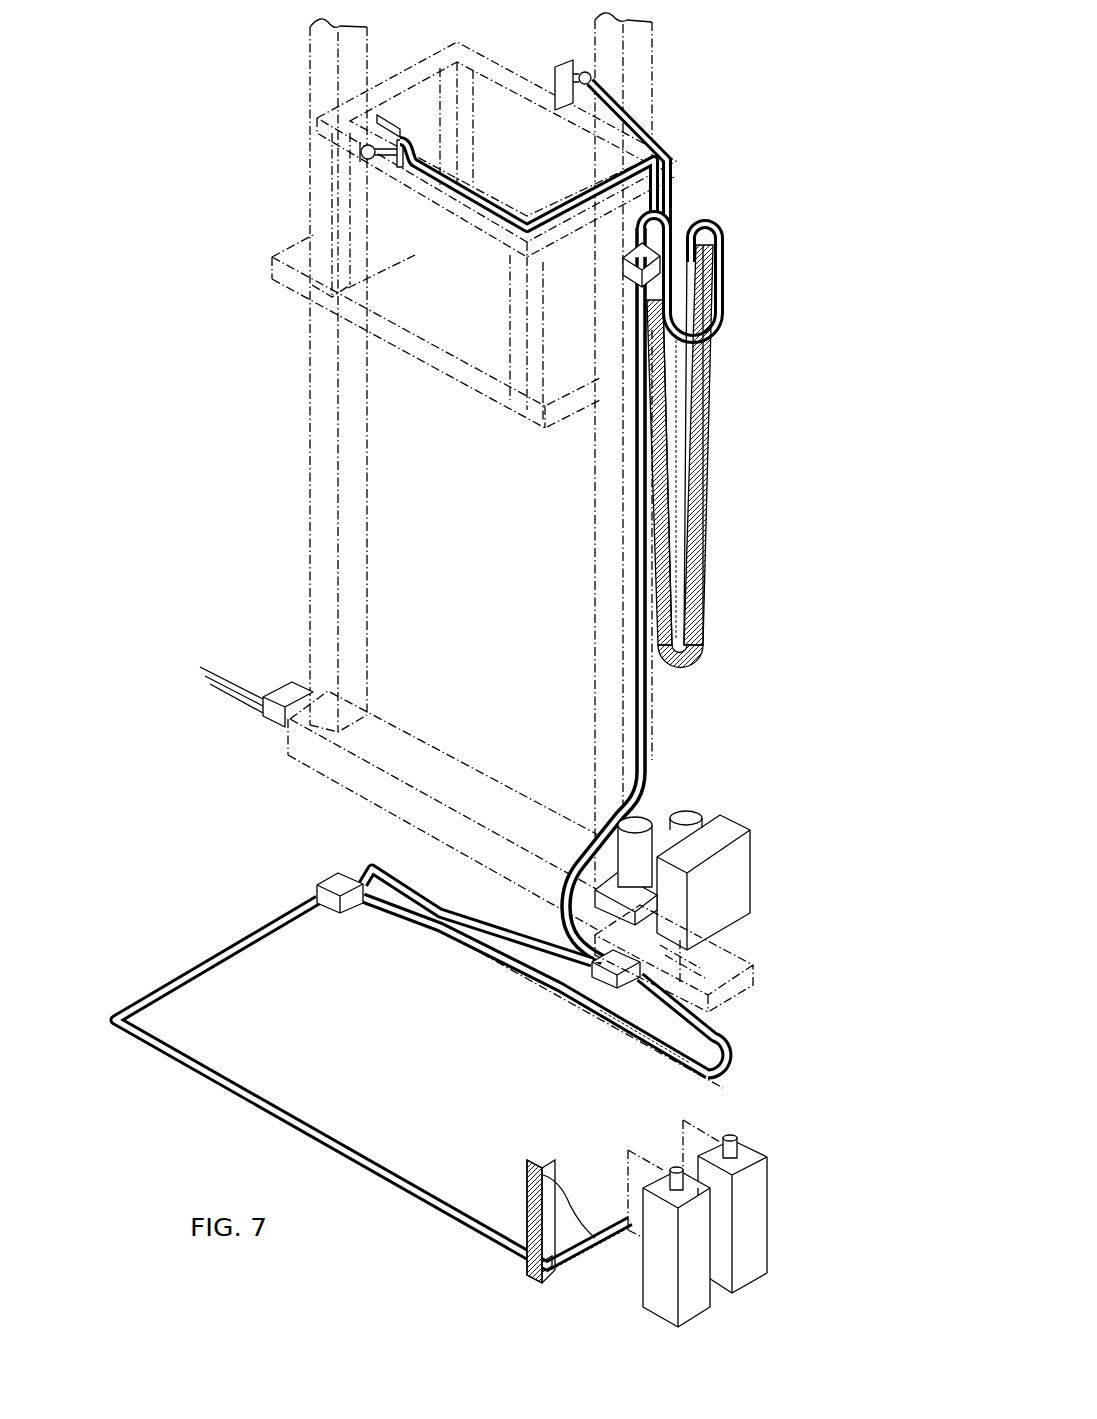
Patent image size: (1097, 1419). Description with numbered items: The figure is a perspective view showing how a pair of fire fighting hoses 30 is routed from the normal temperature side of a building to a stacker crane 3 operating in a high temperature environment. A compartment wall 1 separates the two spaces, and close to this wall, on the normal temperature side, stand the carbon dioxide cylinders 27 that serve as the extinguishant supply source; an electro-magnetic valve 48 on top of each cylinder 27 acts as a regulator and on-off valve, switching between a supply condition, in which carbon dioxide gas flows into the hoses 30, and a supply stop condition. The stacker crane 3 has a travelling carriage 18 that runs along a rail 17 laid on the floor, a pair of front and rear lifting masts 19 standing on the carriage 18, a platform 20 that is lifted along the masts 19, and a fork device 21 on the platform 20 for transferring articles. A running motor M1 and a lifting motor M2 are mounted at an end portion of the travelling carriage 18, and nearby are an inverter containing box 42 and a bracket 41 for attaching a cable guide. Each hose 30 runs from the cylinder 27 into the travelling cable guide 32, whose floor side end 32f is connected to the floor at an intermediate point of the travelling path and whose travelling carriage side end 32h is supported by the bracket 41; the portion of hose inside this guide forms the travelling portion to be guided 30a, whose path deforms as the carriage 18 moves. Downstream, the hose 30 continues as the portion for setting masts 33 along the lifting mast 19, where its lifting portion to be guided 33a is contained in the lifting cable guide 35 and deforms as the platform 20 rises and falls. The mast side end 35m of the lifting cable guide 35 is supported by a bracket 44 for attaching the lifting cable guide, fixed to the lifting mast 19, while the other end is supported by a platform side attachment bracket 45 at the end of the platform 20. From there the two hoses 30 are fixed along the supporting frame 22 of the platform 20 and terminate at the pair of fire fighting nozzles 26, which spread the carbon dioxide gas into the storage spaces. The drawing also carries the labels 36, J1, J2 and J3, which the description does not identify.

The compartment wall 1 is at (527, 1200).
The stacker crane 3 is at (210, 425).
The rail 17 is at (240, 708).
The travelling carriage 18 is at (412, 737).
The lifting mast 19 is at (312, 580).
The platform 20 is at (480, 418).
The fork device 21 is at (470, 332).
The supporting frame 22 is at (393, 78).
The fire fighting nozzle 26 is at (355, 152).
The carbon dioxide cylinder 27 is at (760, 1233).
The fire fighting hose 30 is at (205, 955).
The travelling portion to be guided 30a is at (520, 983).
The travelling cable guide 32 is at (735, 1062).
The floor side end 32f is at (412, 913).
The travelling carriage side end 32h is at (628, 1022).
The portion for setting masts 33 is at (648, 738).
The lifting portion to be guided 33a is at (697, 500).
The lifting cable guide 35 is at (708, 560).
The mast side end 35m is at (725, 260).
The upper tube 36 is at (455, 185).
The bracket for attaching cable guide 41 is at (745, 958).
The inverter containing box 42 is at (740, 858).
The bracket for attaching the lifting cable guide 44 is at (677, 233).
The platform side attachment bracket 45 is at (708, 378).
The electro-magnetic valve 48 is at (676, 1170).
The joint J1 is at (322, 876).
The joint J2 is at (590, 960).
The joint J3 is at (625, 270).
The running motor M1 is at (695, 815).
The lifting motor M2 is at (637, 815).